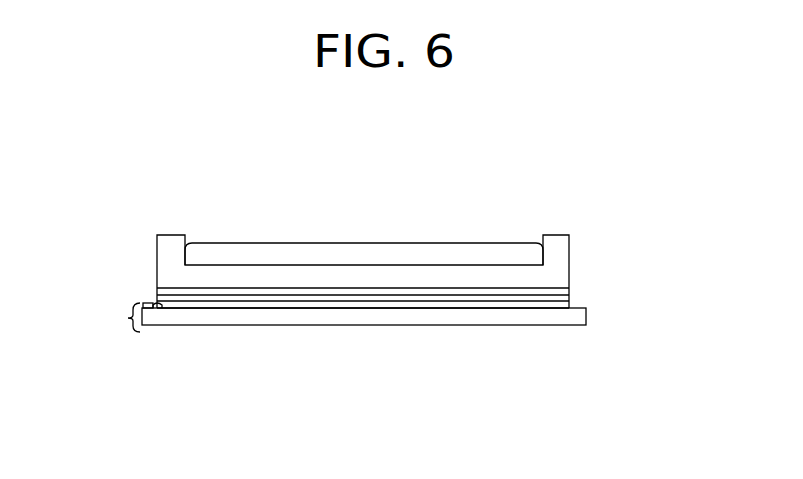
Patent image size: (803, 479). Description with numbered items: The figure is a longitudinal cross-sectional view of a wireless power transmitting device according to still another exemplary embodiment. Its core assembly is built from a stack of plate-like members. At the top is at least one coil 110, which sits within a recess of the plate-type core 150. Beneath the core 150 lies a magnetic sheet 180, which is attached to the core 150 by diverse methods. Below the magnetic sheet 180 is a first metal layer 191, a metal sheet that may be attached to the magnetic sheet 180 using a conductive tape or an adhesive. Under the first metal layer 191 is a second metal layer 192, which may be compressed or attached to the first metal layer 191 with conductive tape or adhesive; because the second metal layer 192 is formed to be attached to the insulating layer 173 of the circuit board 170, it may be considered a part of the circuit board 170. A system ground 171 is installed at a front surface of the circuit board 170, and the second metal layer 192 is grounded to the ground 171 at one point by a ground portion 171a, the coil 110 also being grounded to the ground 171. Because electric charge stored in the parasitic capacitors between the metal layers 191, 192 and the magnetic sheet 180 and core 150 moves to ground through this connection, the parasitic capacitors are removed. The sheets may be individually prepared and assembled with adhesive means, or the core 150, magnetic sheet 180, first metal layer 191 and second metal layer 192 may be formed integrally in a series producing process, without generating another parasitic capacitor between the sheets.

The coil 110 is at (283, 245).
The plate-type core 150 is at (559, 246).
The circuit board 170 is at (128, 318).
The system ground 171 is at (148, 305).
The ground portion 171a is at (158, 306).
The insulating layer 173 is at (488, 318).
The magnetic sheet 180 is at (525, 291).
The first metal layer 191 is at (543, 298).
The second metal layer 192 is at (553, 306).